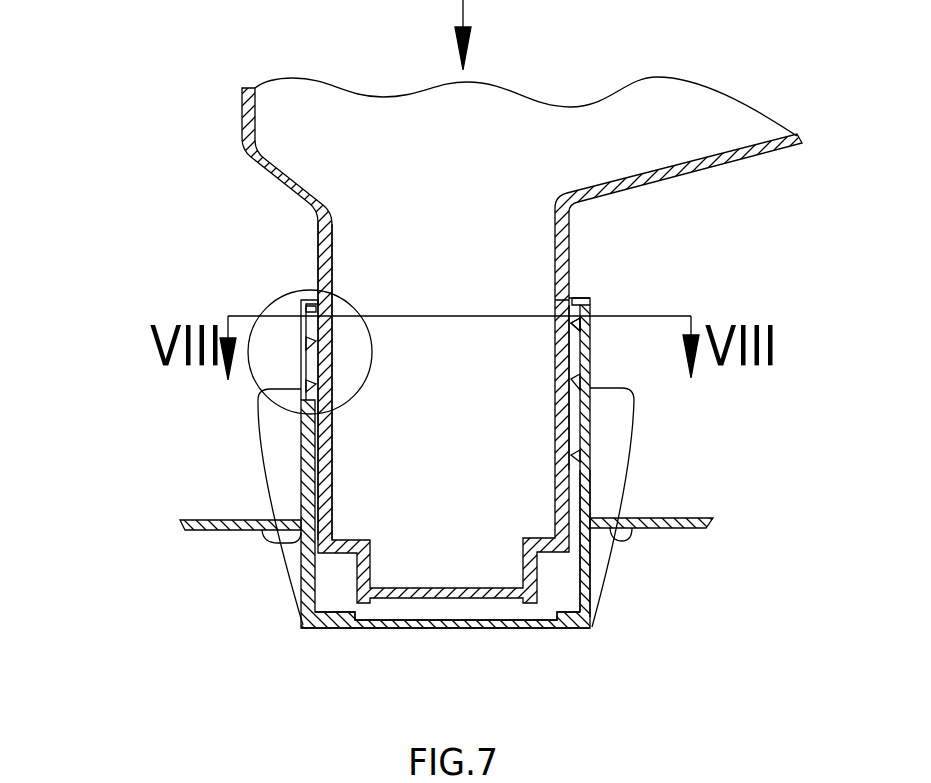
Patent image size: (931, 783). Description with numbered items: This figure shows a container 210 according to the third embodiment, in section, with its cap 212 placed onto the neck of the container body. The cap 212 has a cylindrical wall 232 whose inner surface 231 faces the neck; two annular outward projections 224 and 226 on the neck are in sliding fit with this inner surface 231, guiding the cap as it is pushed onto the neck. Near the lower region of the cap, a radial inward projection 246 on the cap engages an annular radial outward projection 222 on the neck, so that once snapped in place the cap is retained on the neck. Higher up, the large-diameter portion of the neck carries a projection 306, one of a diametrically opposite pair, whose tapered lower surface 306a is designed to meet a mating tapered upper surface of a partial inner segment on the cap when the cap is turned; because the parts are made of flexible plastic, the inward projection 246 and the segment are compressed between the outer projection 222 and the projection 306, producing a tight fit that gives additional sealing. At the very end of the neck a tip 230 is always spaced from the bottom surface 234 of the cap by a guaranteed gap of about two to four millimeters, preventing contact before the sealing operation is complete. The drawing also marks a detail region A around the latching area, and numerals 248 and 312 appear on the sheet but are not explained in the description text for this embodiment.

The container 210 is at (240, 127).
The cap 212 is at (252, 584).
The outer projection of neck 222 is at (590, 398).
The annular outward projection 224 is at (618, 536).
The annular outward projection 226 is at (585, 480).
The tip 230 is at (445, 681).
The inner surface 231 is at (360, 314).
The cylindrical wall 232 is at (302, 517).
The bottom surface 234 is at (470, 624).
The radial inward projection 246 is at (303, 385).
The ratchet tooth 248 is at (303, 420).
The projection 306 is at (571, 316).
The tapered lower surface 306a is at (578, 331).
The detail area A is at (255, 315).
The rib 312 is at (666, 774).